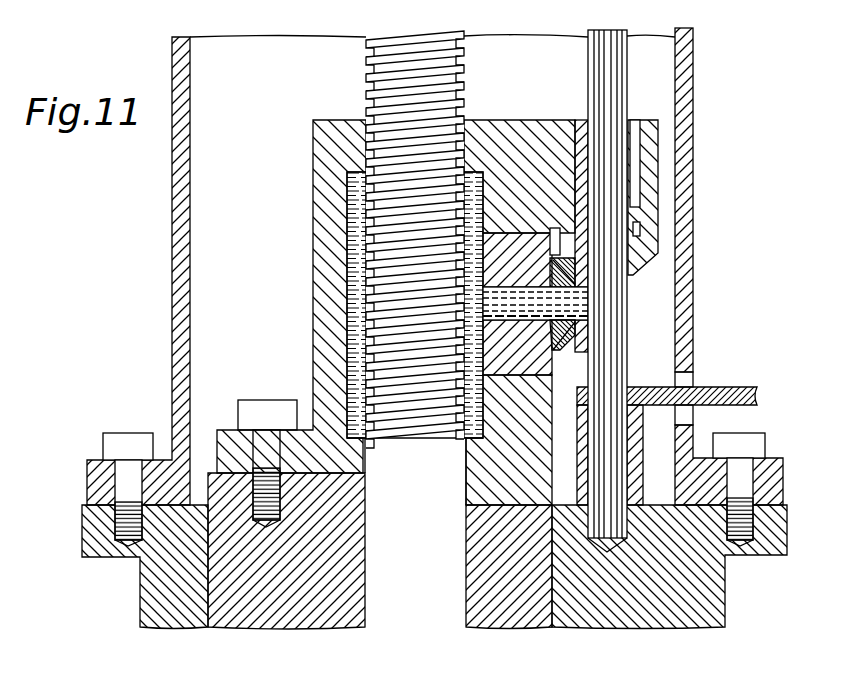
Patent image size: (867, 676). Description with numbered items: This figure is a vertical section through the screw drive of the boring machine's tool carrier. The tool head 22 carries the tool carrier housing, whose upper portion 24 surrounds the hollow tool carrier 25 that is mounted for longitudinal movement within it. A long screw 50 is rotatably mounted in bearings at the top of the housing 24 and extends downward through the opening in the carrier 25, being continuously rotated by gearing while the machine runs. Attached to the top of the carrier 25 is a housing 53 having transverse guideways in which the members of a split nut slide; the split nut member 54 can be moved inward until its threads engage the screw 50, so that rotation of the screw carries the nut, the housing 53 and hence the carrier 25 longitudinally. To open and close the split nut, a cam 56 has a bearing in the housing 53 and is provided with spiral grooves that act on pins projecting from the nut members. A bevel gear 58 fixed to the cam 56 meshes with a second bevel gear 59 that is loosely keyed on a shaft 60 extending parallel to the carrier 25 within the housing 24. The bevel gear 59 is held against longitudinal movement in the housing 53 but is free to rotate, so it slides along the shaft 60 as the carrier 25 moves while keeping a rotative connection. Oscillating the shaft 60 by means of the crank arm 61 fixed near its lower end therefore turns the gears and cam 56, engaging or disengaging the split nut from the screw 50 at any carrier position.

The tool head 22 is at (158, 578).
The upper portion of tool carrier housing 24 is at (694, 182).
The tool carrier 25 is at (335, 614).
The screw 50 is at (462, 82).
The housing 53 is at (522, 120).
The split nut member 54 is at (462, 440).
The cam 56 is at (548, 352).
The bevel gear 58 is at (582, 279).
The bevel gear 59 is at (652, 246).
The shaft 60 is at (612, 356).
The crank arm 61 is at (724, 388).